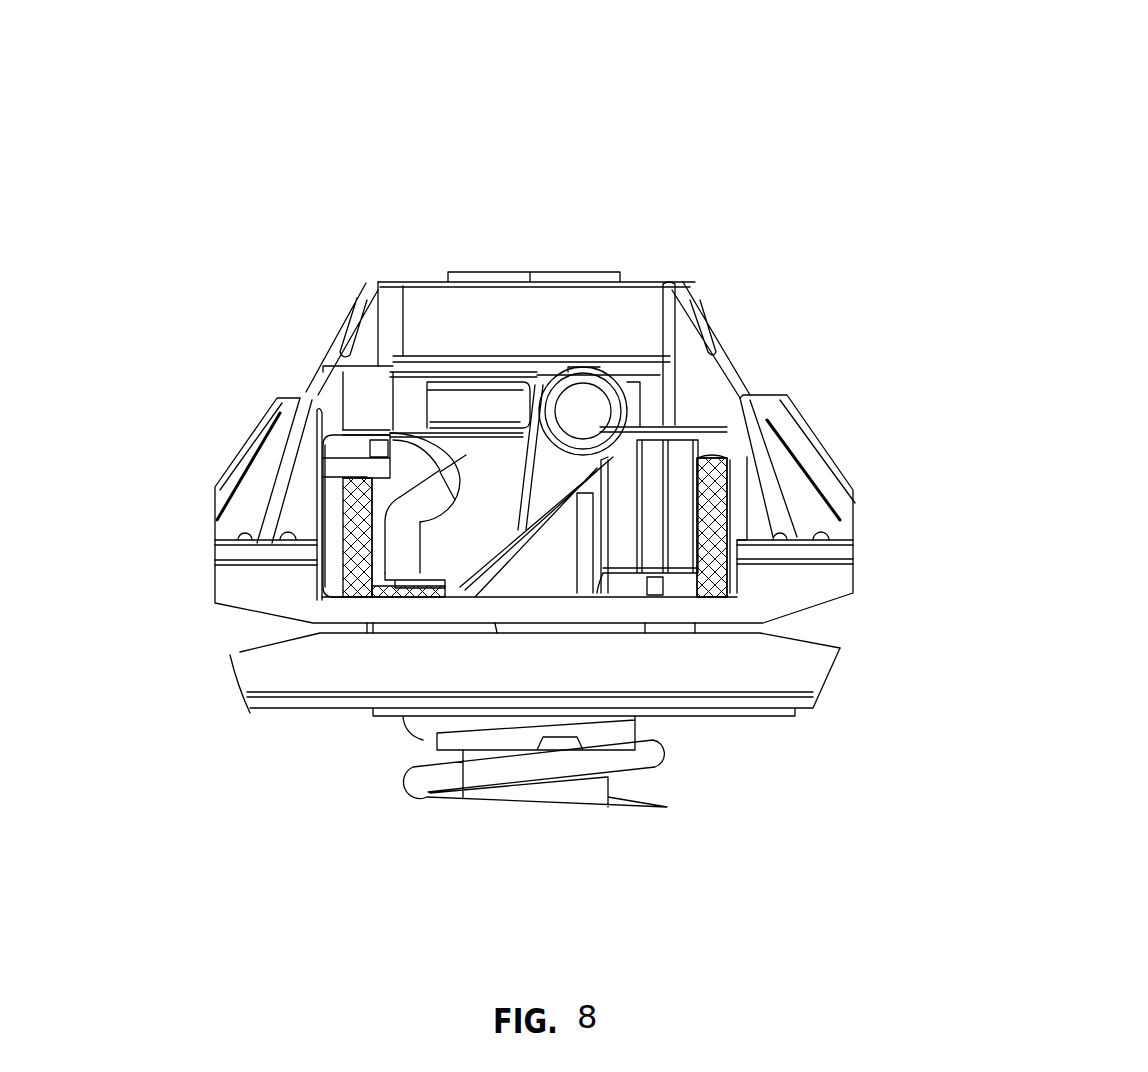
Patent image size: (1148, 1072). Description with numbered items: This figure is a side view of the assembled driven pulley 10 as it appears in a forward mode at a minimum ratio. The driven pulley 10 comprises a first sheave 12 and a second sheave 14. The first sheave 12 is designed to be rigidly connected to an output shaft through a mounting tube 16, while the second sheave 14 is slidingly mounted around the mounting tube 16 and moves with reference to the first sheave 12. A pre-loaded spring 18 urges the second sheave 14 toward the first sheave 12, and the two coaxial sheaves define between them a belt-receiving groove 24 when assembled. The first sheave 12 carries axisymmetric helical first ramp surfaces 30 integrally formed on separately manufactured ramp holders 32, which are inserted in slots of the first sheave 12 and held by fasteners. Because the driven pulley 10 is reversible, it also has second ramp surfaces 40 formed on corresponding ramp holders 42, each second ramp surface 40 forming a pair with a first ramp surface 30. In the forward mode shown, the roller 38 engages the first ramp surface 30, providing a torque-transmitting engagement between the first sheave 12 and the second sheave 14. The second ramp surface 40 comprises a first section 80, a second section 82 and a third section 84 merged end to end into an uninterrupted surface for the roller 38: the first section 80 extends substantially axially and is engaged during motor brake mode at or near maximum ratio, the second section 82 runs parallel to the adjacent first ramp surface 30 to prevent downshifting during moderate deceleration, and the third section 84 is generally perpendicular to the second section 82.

The driven pulley 10 is at (803, 82).
The first sheave 12 is at (845, 480).
The second sheave 14 is at (787, 713).
The mounting tube 16 is at (507, 793).
The pre-loaded spring 18 is at (653, 762).
The belt-receiving groove 24 is at (207, 640).
The first ramp surface 30 is at (600, 470).
The ramp holder 32 is at (650, 547).
The roller 38 is at (613, 367).
The second ramp surface 40 is at (423, 527).
The ramp holder 42 is at (385, 495).
The first section 80 is at (403, 560).
The second section 82 is at (420, 503).
The third section 84 is at (430, 440).